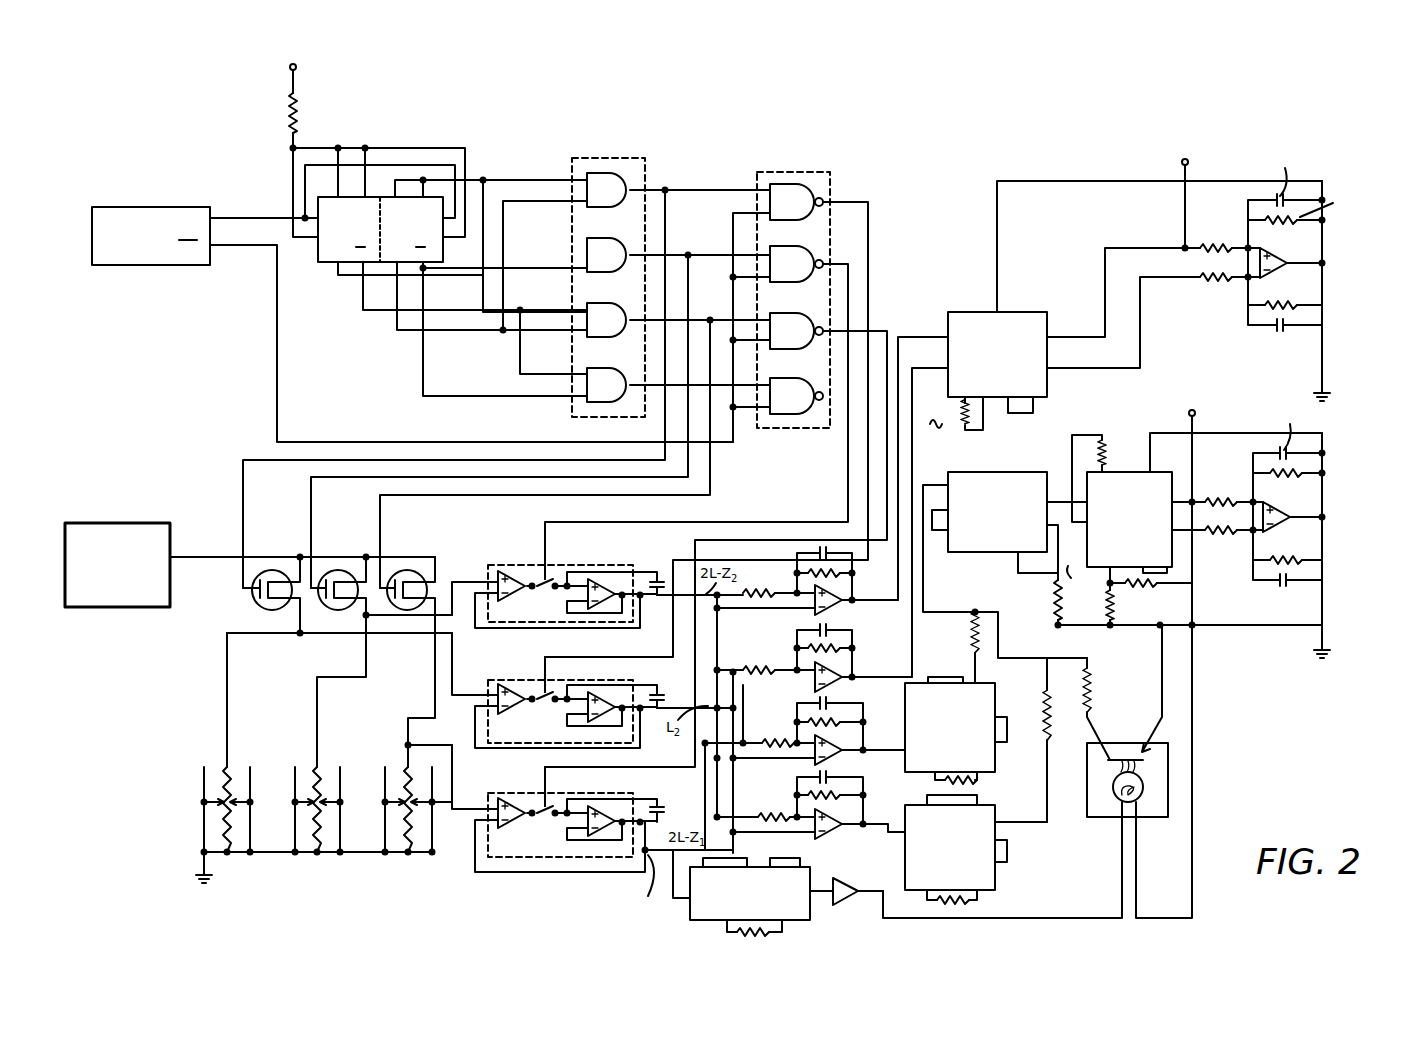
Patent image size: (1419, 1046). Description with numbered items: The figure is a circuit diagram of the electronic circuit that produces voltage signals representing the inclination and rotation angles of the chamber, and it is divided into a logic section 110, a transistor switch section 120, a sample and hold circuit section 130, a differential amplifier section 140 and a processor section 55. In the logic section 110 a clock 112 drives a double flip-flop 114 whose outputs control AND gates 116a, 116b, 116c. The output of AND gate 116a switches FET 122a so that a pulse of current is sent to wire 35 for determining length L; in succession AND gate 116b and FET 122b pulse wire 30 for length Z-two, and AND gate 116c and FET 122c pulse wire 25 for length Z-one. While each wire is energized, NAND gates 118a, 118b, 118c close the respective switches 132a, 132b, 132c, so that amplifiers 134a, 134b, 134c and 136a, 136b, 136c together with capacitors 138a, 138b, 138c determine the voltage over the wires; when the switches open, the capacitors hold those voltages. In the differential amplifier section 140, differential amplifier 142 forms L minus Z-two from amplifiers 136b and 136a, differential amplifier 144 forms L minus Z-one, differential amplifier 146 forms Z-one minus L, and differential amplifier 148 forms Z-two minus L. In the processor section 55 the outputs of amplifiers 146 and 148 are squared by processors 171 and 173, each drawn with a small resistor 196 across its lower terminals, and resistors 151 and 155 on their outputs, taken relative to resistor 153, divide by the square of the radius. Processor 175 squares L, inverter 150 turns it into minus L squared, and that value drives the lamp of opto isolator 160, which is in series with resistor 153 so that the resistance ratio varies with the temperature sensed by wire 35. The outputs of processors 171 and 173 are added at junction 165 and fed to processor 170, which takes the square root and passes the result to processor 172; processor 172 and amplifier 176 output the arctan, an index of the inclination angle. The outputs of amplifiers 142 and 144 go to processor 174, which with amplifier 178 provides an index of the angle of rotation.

The processor section 55 is at (1352, 378).
The logic section 110 is at (302, 326).
The clock 112 is at (162, 215).
The double flip-flop 114 is at (386, 195).
The AND gate 116a is at (622, 185).
The AND gate 116b is at (622, 250).
The AND gate 116c is at (595, 310).
The NAND gate 118a is at (800, 190).
The NAND gate 118b is at (808, 265).
The NAND gate 118c is at (810, 330).
The transistor switch section 120 is at (230, 625).
The FET 122a is at (273, 570).
The FET 122b is at (340, 570).
The FET 122c is at (408, 570).
The wire 25 is at (390, 770).
The wire 30 is at (298, 770).
The wire 35 is at (208, 770).
The sample and hold circuit section 130 is at (571, 893).
The switch 132a is at (553, 688).
The switch 132b is at (552, 578).
The switch 132c is at (553, 802).
The amplifier 134a is at (508, 688).
The amplifier 134b is at (508, 575).
The amplifier 134c is at (508, 802).
The sample and hold amplifier 136a is at (603, 692).
The sample and hold amplifier 136b is at (603, 578).
The sample and hold amplifier 136c is at (605, 805).
The capacitor 138a is at (657, 685).
The capacitor 138b is at (657, 578).
The capacitor 138c is at (662, 800).
The differential amplifier section 140 is at (816, 583).
The differential amplifier 142 is at (812, 625).
The differential amplifier 144 is at (812, 700).
The differential amplifier 146 is at (812, 775).
The differential amplifier 148 is at (848, 820).
The inverter 150 is at (843, 908).
The resistor 151 is at (972, 624).
The resistor 153 is at (1090, 695).
The resistor 155 is at (1052, 710).
The opto isolator 160 is at (1168, 780).
The junction 165 is at (1047, 658).
The processor 170 is at (1022, 472).
The processor 171 is at (998, 695).
The processor 172 is at (1125, 445).
The processor 173 is at (1000, 876).
The processor 174 is at (962, 318).
The processor 175 is at (688, 905).
The amplifier 176 is at (1305, 517).
The amplifier 178 is at (1300, 262).
The 196 ohm resistor 196 is at (1009, 785).